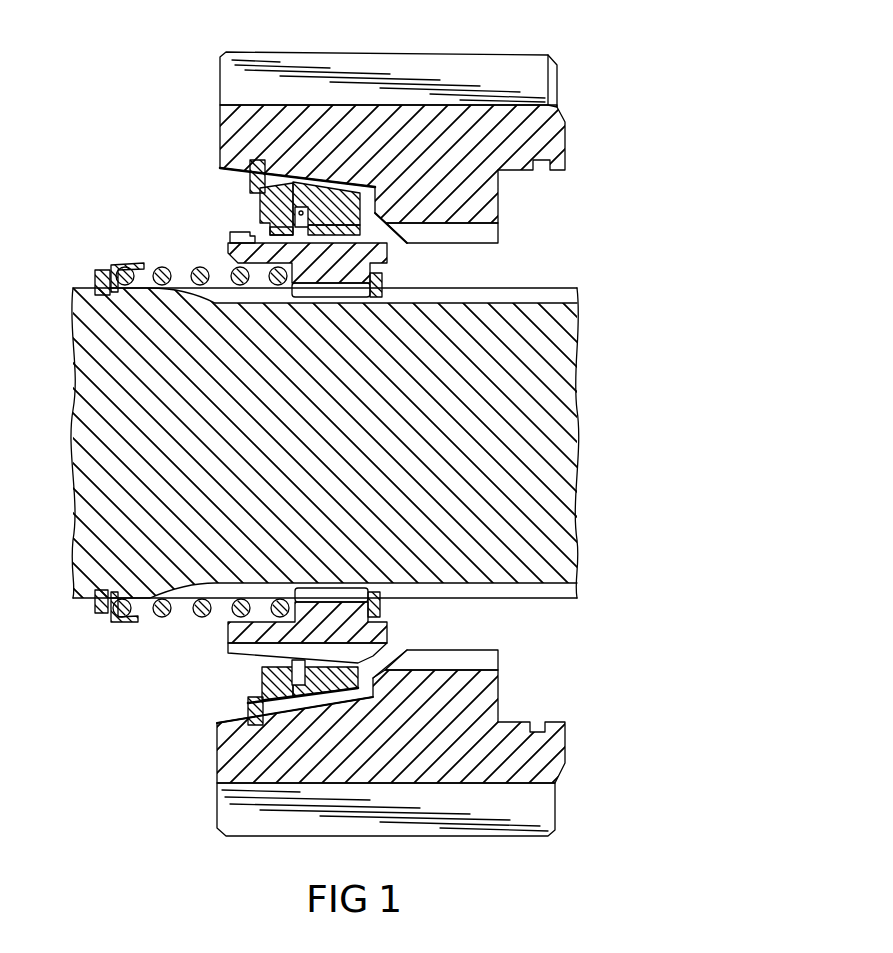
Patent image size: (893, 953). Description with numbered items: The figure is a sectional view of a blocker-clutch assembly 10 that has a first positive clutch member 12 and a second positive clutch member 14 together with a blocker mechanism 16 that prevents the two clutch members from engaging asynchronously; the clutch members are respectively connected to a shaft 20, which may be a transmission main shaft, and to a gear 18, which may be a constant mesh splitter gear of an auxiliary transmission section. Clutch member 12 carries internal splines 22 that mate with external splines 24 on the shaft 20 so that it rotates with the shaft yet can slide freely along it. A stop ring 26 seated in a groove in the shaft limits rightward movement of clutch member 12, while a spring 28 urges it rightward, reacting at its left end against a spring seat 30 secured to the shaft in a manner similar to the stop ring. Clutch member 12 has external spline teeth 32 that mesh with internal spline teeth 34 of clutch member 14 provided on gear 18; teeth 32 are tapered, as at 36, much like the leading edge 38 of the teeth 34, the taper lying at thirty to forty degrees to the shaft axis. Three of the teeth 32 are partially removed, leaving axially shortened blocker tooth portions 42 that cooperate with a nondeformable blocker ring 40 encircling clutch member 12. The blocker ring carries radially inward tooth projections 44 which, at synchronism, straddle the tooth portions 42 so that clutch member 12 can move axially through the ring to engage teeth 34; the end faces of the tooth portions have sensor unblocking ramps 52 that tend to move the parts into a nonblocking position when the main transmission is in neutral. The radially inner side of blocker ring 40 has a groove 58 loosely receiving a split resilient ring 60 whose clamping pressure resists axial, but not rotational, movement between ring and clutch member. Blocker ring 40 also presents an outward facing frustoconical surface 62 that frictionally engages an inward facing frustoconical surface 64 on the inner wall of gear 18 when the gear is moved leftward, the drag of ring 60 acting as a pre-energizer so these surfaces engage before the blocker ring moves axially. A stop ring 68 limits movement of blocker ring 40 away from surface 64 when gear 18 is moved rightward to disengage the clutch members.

The blocker-clutch assembly 10 is at (122, 160).
The first positive clutch member 12 is at (400, 263).
The second positive clutch member 14 is at (508, 227).
The blocker mechanism 16 is at (230, 697).
The gear 18 is at (445, 72).
The shaft 20 is at (333, 449).
The internal splines 22 is at (318, 294).
The external splines 24 is at (537, 298).
The stop ring 26 is at (378, 298).
The spring 28 is at (162, 619).
The spring seat 30 is at (100, 614).
The external spline teeth 32 is at (338, 653).
The internal spline teeth 34 is at (482, 246).
The taper 36 is at (390, 657).
The leading edge 38 is at (408, 245).
The blocker ring 40 is at (262, 685).
The blocker tooth portions 42 is at (229, 238).
The tooth projections 44 is at (250, 190).
The ramp 52 is at (267, 220).
The groove 58 is at (296, 211).
The resilient ring 60 is at (302, 206).
The frustoconical surface 62 is at (303, 700).
The frustoconical surface 64 is at (218, 716).
The stop ring 68 is at (257, 726).